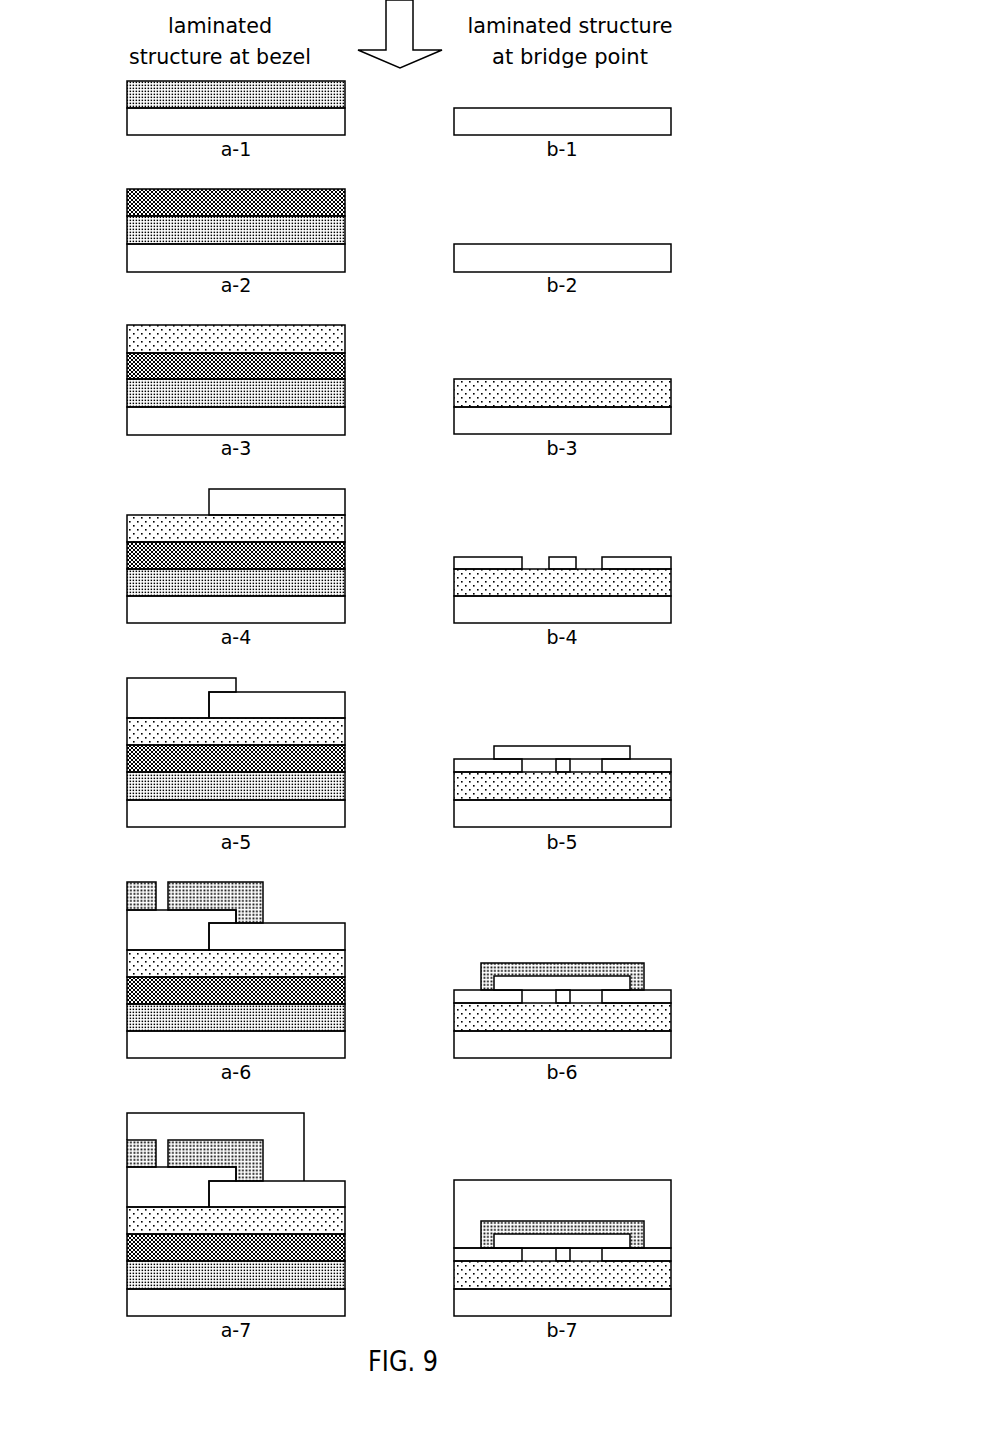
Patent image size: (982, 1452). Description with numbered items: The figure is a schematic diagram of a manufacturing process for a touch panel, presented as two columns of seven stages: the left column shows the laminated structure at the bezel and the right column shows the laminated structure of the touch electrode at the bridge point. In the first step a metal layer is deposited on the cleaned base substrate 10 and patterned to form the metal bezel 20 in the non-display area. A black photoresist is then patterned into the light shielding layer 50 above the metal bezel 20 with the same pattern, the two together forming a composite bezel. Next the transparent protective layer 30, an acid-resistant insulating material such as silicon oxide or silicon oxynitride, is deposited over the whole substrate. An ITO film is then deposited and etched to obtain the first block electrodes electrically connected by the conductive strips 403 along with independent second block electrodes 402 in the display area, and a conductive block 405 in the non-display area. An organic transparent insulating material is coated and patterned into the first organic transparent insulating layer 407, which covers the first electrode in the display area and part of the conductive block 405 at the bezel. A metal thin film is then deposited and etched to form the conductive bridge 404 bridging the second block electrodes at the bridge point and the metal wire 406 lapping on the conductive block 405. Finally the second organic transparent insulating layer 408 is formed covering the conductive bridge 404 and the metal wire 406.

The base substrate 10 is at (165, 1302).
The metal bezel 20 is at (165, 1275).
The transparent protective layer 30 is at (165, 1221).
The light shielding layer 50 is at (165, 1248).
The first electrode segments 402 is at (697, 1256).
The conductive strip 403 is at (697, 1230).
The conductive bridge 404 is at (697, 1209).
The conductive block 405 is at (372, 1193).
The metal wire 406 is at (165, 1153).
The first organic transparent insulating layer 407 is at (697, 719).
The second organic transparent insulating layer 408 is at (697, 1184).